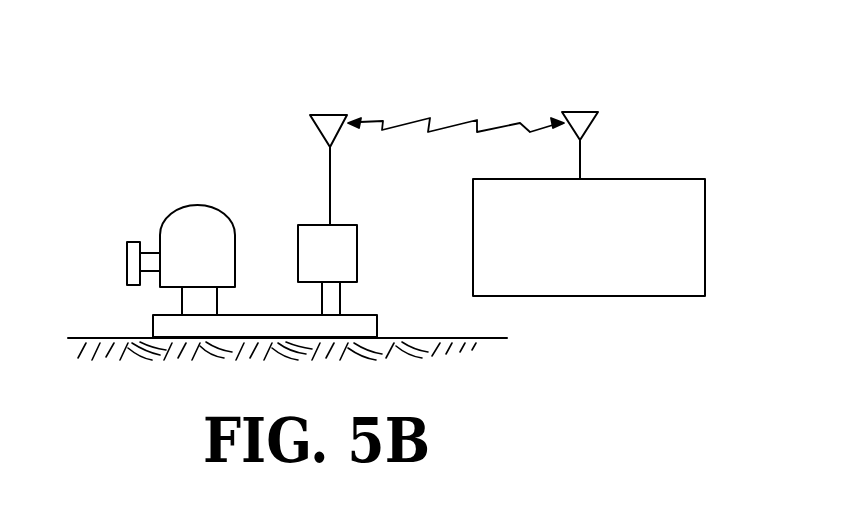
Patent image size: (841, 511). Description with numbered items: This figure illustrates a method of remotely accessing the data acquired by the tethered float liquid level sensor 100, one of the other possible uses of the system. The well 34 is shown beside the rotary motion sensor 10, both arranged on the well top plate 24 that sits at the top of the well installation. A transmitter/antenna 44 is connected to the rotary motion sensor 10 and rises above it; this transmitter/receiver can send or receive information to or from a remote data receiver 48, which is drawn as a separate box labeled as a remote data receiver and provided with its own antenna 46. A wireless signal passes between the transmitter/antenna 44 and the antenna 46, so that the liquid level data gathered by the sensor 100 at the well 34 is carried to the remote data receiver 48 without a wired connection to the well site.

The rotary motion sensor 10 is at (342, 268).
The well top plate 24 is at (358, 315).
The well 34 is at (215, 270).
The transmitter/antenna 44 is at (330, 112).
The antenna 46 is at (580, 112).
The remote data receiver 48 is at (663, 178).
The tethered float liquid level sensor 100 is at (284, 211).